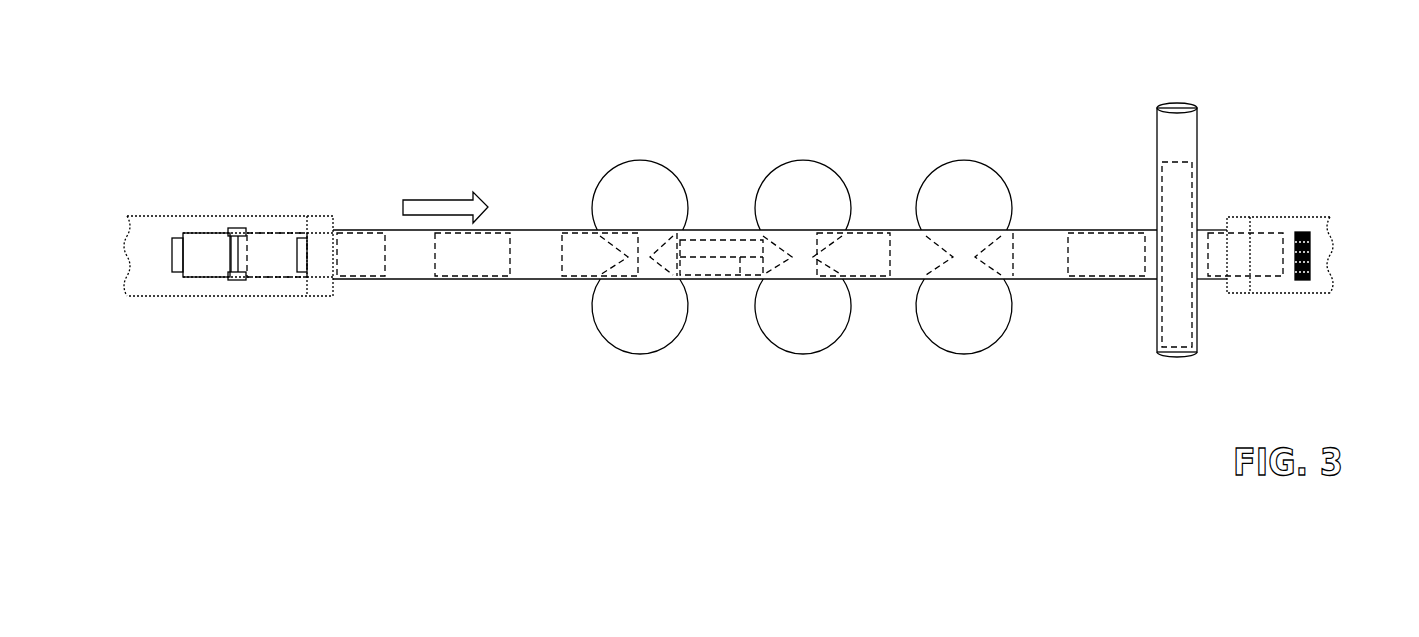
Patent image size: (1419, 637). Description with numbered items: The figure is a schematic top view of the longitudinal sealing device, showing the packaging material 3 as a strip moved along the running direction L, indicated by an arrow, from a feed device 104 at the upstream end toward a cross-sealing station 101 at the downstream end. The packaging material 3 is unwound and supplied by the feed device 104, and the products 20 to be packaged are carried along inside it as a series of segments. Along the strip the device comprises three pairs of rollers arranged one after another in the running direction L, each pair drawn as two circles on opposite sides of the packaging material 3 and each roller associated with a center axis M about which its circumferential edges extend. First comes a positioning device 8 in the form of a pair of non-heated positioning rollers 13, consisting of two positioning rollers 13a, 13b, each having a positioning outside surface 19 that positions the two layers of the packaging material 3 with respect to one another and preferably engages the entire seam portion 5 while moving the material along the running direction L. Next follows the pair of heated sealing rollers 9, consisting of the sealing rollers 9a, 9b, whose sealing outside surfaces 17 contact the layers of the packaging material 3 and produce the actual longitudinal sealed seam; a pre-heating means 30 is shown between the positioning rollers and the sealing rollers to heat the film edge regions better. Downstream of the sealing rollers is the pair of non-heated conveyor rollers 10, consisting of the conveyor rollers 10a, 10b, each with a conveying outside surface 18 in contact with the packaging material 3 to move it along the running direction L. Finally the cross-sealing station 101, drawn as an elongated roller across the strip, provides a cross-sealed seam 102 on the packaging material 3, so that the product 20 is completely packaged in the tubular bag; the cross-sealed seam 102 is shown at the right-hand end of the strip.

The packaging material 3 is at (520, 282).
The seam portion 5 is at (968, 257).
The positioning device 8 is at (642, 160).
The pair of heated sealing rollers 9 is at (818, 164).
The sealing roller 9a is at (798, 163).
The sealing roller 9b is at (843, 337).
The pair of non-heated conveyor rollers 10 is at (968, 160).
The conveyor roller 10a is at (995, 171).
The conveyor roller 10b is at (1008, 328).
The pair of non-heated positioning rollers 13 is at (670, 93).
The positioning roller 13a is at (607, 175).
The positioning roller 13b is at (592, 323).
The sealing outside surface 17 is at (767, 175).
The conveying outside surface 18 is at (932, 172).
The positioning outside surface 19 is at (592, 212).
The product 20 is at (463, 265).
The pre-heating means 30 is at (725, 257).
The center axis M is at (638, 305).
The running direction L is at (435, 205).
The cross-sealing station 101 is at (1198, 138).
The cross-sealed seam 102 is at (1310, 253).
The feed device 104 is at (203, 232).